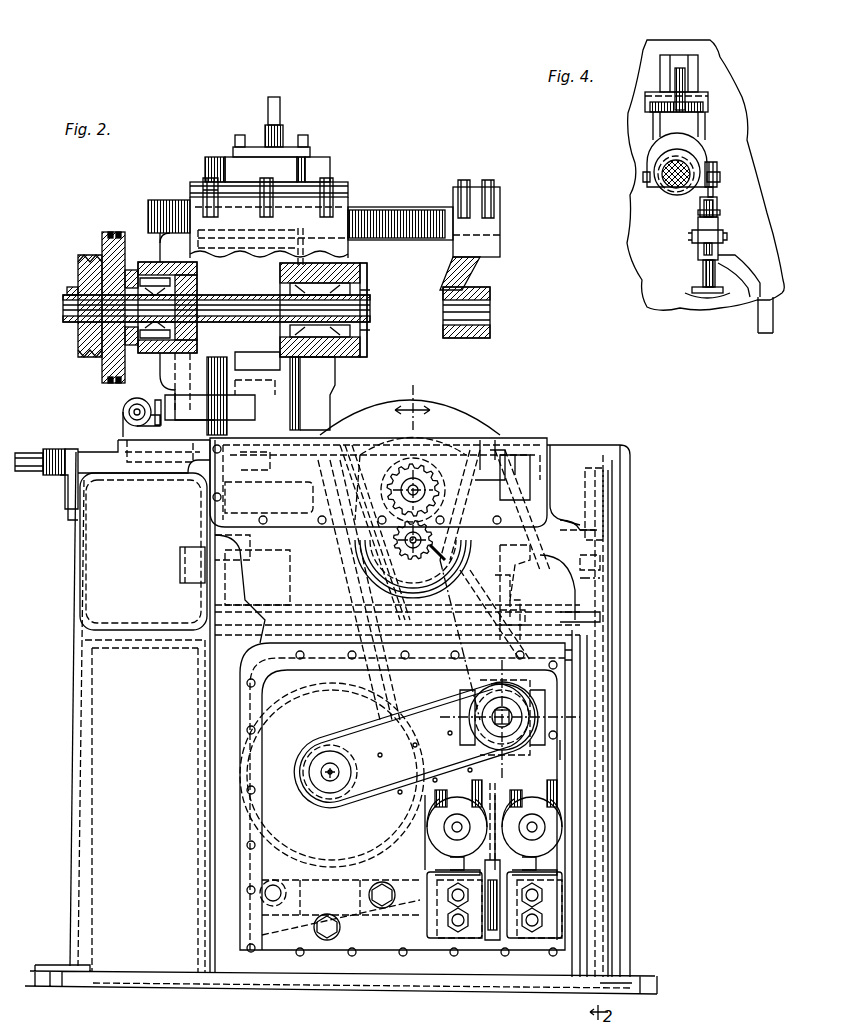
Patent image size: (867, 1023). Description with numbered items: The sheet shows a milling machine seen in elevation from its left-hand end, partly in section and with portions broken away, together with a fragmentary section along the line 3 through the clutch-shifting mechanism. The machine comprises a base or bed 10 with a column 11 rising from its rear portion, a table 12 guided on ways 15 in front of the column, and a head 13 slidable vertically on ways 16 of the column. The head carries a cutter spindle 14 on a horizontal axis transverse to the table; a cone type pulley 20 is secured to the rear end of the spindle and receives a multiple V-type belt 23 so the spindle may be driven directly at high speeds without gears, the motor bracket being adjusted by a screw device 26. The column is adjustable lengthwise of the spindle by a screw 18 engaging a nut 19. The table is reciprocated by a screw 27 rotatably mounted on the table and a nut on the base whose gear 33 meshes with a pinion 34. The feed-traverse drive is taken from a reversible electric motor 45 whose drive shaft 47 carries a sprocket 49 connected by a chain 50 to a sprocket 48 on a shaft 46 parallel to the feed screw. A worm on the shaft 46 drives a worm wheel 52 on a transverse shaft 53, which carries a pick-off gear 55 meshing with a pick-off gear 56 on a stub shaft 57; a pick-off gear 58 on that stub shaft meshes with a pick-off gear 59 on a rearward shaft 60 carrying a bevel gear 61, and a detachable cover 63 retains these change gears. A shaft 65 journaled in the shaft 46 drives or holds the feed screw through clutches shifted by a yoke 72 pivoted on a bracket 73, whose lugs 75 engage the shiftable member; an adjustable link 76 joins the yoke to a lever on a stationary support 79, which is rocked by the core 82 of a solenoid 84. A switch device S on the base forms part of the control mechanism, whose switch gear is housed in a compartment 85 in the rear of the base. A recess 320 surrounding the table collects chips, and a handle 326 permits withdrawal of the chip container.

In FIG. 2, the section line 3 is at (413, 407).
In FIG. 2, the base or bed 10 is at (95, 569).
In FIG. 2, the column 11 is at (288, 150).
In FIG. 2, the table 12 is at (458, 443).
In FIG. 2, the head 13 is at (338, 222).
In FIG. 2, the cutter spindle 14 is at (367, 291).
In FIG. 2, the ways 15 is at (488, 445).
In FIG. 2, the ways 16 is at (213, 158).
In FIG. 2, the screw 18 is at (92, 470).
In FIG. 2, the nut 19 is at (160, 460).
In FIG. 2, the cone type pulley 20 is at (80, 275).
In FIG. 2, the multiple V-type belt 23 is at (118, 232).
In FIG. 2, the screw device 26 is at (125, 408).
In FIG. 2, the screw 27 is at (413, 487).
In FIG. 2, the gear 33 is at (372, 472).
In FIG. 2, the pinion 34 is at (350, 540).
In FIG. 2, the reversible electric motor 45 is at (385, 705).
In FIG. 2, the shaft 46 is at (535, 717).
In FIG. 2, the drive shaft 47 is at (340, 772).
In FIG. 2, the sprocket 48 is at (540, 745).
In FIG. 2, the sprocket 49 is at (330, 795).
In FIG. 2, the chain 50 is at (370, 785).
In FIG. 2, the worm wheel 52 is at (518, 587).
In FIG. 2, the shaft 53 is at (524, 608).
In FIG. 2, the pick-off gear 55 is at (615, 652).
In FIG. 2, the pick-off gear 56 is at (612, 495).
In FIG. 2, the stub shaft 57 is at (620, 540).
In FIG. 2, the pick-off gear 58 is at (612, 568).
In FIG. 2, the pick-off gear 59 is at (595, 470).
In FIG. 2, the shaft 60 is at (512, 562).
In FIG. 2, the bevel gear 61 is at (462, 578).
In FIG. 2, the detachable cover 63 is at (632, 598).
In FIG. 4, the shaft 65 is at (665, 185).
In FIG. 4, the yoke 72 is at (703, 130).
In FIG. 4, the bracket 73 is at (700, 73).
In FIG. 4, the lugs 75 is at (655, 160).
In FIG. 4, the adjustable link 76 is at (718, 200).
In FIG. 4, the stationary support 79 is at (722, 243).
In FIG. 4, the core 82 is at (703, 270).
In FIG. 4, the solenoid 84 is at (695, 300).
In FIG. 2, the compartment 85 is at (90, 826).
In FIG. 2, the recess 320 is at (535, 455).
In FIG. 2, the handle 326 is at (190, 563).
In FIG. 2, the switch device S is at (515, 455).